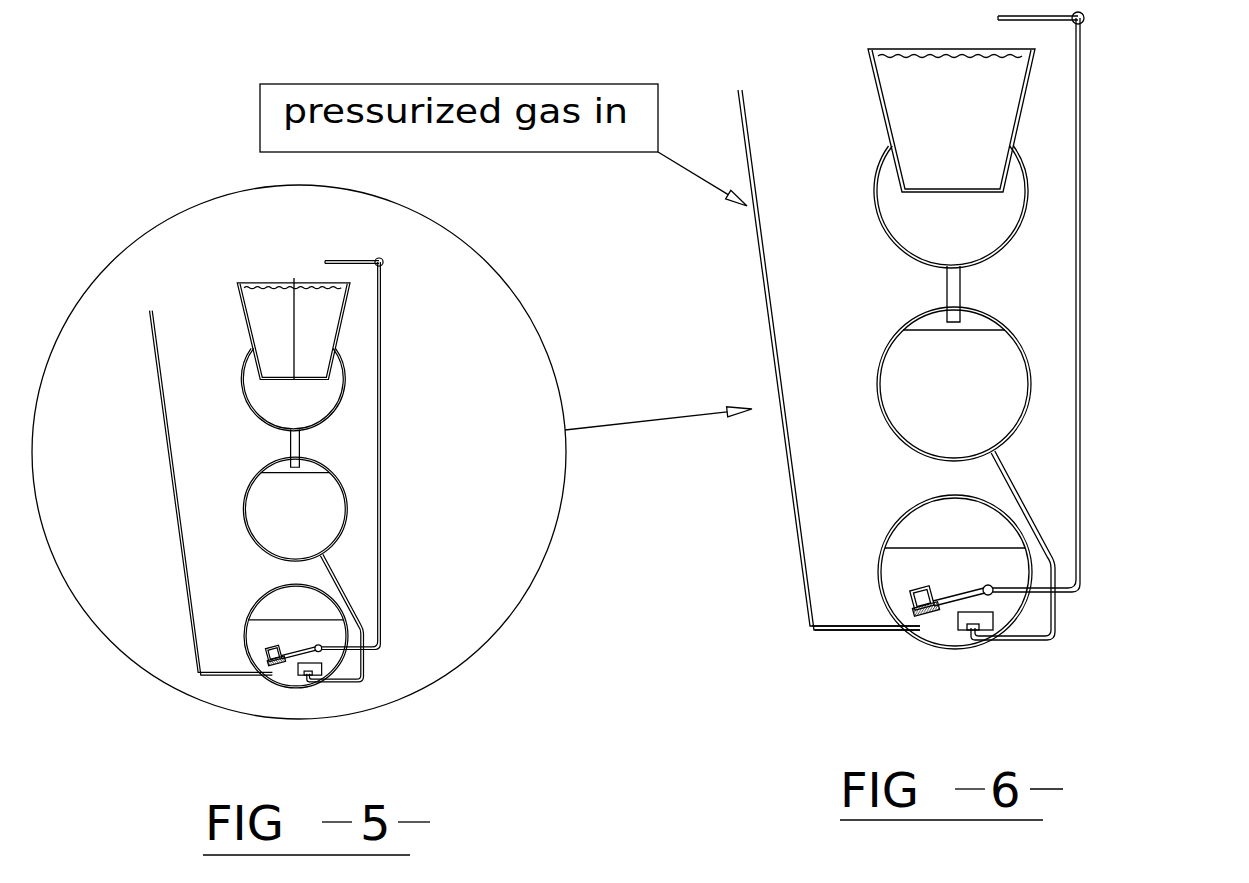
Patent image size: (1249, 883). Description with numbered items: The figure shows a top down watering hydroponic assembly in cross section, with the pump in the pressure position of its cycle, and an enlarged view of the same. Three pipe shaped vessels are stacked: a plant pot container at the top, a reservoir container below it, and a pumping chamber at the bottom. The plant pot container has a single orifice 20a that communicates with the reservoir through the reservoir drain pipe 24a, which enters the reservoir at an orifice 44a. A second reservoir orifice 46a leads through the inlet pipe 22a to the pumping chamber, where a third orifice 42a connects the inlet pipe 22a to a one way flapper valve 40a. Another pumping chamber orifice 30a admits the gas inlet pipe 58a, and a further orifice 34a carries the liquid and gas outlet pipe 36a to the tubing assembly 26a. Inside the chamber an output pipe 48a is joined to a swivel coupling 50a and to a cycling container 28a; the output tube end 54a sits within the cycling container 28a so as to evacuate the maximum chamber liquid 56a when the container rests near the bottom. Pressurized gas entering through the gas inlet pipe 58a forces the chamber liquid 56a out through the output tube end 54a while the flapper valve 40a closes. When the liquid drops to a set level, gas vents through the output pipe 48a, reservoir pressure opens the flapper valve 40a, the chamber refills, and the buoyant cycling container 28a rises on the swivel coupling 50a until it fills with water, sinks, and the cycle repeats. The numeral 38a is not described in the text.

The orifice 20a is at (972, 262).
The inlet pipe 22a is at (1050, 535).
The reservoir drain pipe 24a is at (963, 288).
The tubing assembly 26a is at (1081, 23).
The cycling container 28a is at (923, 590).
The orifice 30a is at (900, 628).
The orifice 34a is at (1033, 585).
The liquid and gas outlet pipe 36a is at (1088, 423).
The lower vessel wall 38a is at (917, 643).
The flapper valve 40a is at (965, 632).
The orifice 42a is at (995, 640).
The orifice 44a is at (980, 305).
The orifice 46a is at (1013, 432).
The output pipe 48a is at (972, 595).
The swivel coupling 50a is at (993, 592).
The orifice 54a is at (910, 600).
The chamber liquid 56a is at (973, 586).
The gas inlet pipe 58a is at (765, 333).